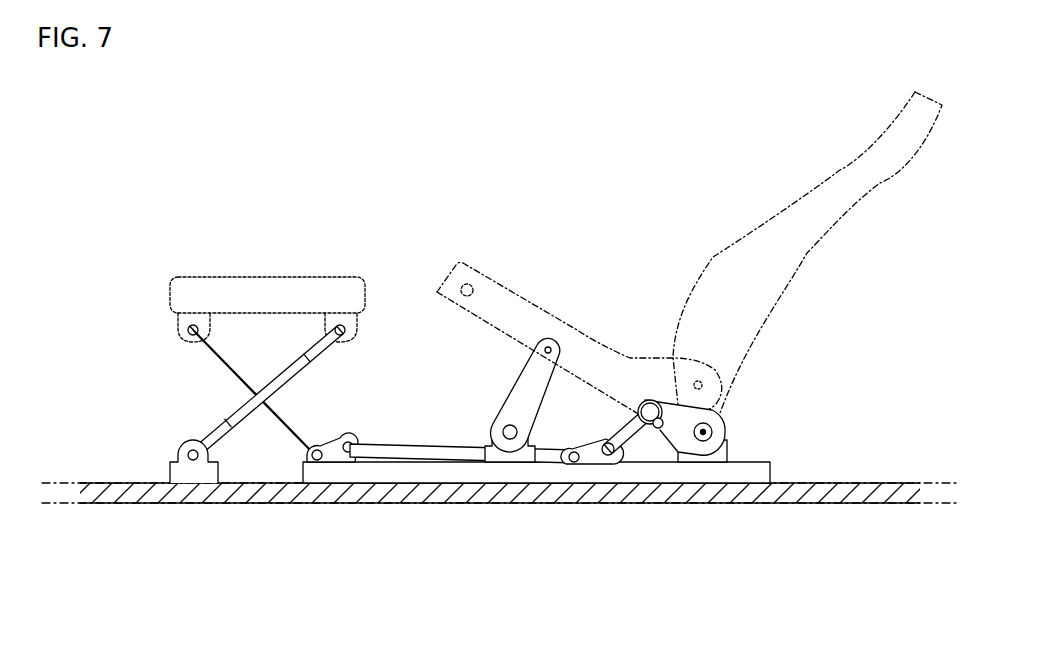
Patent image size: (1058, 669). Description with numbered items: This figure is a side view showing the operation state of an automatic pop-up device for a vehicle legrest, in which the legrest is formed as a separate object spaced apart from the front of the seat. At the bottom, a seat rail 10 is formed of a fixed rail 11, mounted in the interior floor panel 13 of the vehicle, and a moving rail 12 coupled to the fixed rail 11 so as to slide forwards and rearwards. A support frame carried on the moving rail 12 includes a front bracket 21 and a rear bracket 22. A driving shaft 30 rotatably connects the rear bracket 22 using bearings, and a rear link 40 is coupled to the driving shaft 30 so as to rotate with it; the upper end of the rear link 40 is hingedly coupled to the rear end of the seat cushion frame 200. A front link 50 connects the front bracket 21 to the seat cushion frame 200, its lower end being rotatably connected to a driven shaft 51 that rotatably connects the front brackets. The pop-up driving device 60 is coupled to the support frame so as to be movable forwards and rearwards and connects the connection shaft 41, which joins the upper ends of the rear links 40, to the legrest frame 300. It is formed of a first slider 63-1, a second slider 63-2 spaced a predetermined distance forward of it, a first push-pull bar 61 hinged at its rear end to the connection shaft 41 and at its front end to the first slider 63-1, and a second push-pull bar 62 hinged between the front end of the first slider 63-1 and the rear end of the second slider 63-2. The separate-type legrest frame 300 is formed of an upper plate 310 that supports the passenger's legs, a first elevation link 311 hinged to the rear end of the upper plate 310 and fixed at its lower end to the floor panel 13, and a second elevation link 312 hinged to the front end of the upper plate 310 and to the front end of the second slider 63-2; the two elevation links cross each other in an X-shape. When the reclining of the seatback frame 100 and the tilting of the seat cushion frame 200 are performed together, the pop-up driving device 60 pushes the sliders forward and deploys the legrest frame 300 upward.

The seat rail 10 is at (465, 565).
The fixed rail 11 is at (486, 470).
The moving rail 12 is at (512, 470).
The interior floor panel 13 is at (880, 483).
The front bracket 21 is at (463, 460).
The rear bracket 22 is at (730, 452).
The driving shaft 30 is at (715, 432).
The rear link 40 is at (720, 413).
The connection shaft 41 is at (652, 400).
The front link 50 is at (522, 392).
The driven shaft 51 is at (503, 425).
The pop-up driving device 60 is at (576, 459).
The first push-pull bar 61 is at (633, 433).
The second push-pull bar 62 is at (553, 460).
The first slider 63-1 is at (603, 466).
The second slider 63-2 is at (318, 464).
The seatback frame 100 is at (822, 240).
The seat cushion frame 200 is at (495, 283).
The legrest frame 300 is at (255, 336).
The upper plate 310 is at (247, 287).
The first elevation link 311 is at (240, 408).
The second elevation link 312 is at (285, 425).